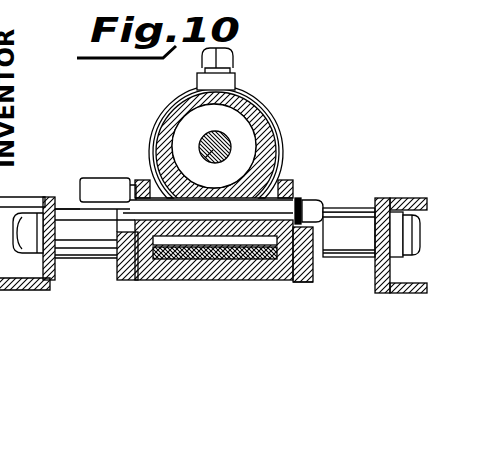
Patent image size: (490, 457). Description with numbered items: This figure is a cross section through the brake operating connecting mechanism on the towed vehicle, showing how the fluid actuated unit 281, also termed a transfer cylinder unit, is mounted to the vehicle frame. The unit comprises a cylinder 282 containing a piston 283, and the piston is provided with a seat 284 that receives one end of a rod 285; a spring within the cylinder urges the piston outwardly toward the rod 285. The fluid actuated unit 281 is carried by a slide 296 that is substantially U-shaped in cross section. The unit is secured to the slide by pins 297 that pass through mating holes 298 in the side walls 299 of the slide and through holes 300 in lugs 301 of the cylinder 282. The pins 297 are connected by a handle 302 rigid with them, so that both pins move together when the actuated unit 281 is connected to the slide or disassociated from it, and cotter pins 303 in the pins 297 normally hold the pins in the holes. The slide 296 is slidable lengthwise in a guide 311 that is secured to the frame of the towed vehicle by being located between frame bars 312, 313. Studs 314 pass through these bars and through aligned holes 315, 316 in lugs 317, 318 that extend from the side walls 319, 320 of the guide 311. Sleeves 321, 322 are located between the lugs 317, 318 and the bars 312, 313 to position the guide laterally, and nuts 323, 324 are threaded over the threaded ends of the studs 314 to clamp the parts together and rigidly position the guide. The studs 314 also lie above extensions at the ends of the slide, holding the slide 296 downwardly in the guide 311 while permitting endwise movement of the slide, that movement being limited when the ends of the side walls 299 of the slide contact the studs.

The fluid actuated unit 281 is at (248, 86).
The cylinder 282 is at (258, 113).
The piston 283 is at (252, 143).
The seat 284 is at (235, 128).
The rod 285 is at (206, 150).
The slide 296 is at (292, 182).
The pins 297 is at (308, 212).
The mating holes 298 is at (98, 186).
The side walls 299 is at (137, 278).
The holes 300 is at (233, 226).
The lugs 301 is at (213, 240).
The handle 302 is at (100, 178).
The cotter pins 303 is at (297, 199).
The guide 311 is at (303, 283).
The bar 312 is at (44, 292).
The bar 313 is at (397, 293).
The studs 314 is at (415, 240).
The hole 315 is at (54, 197).
The hole 316 is at (382, 200).
The lug 317 is at (122, 228).
The lug 318 is at (308, 230).
The side wall 319 is at (117, 270).
The side wall 320 is at (313, 263).
The sleeve 321 is at (69, 207).
The sleeve 322 is at (347, 209).
The nut 323 is at (50, 257).
The nut 324 is at (417, 231).